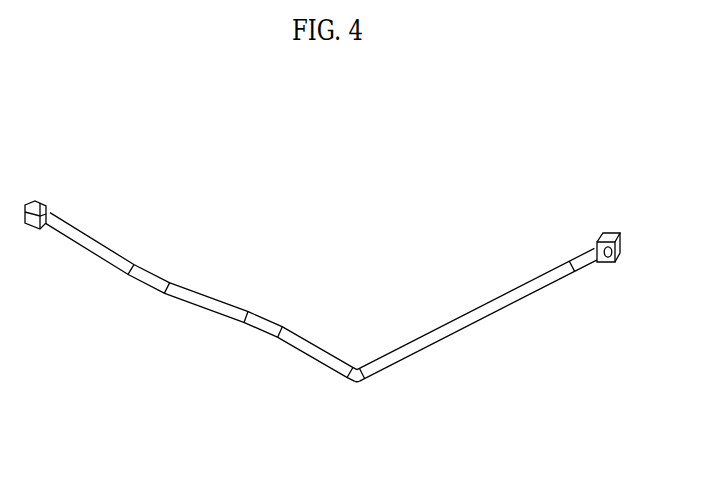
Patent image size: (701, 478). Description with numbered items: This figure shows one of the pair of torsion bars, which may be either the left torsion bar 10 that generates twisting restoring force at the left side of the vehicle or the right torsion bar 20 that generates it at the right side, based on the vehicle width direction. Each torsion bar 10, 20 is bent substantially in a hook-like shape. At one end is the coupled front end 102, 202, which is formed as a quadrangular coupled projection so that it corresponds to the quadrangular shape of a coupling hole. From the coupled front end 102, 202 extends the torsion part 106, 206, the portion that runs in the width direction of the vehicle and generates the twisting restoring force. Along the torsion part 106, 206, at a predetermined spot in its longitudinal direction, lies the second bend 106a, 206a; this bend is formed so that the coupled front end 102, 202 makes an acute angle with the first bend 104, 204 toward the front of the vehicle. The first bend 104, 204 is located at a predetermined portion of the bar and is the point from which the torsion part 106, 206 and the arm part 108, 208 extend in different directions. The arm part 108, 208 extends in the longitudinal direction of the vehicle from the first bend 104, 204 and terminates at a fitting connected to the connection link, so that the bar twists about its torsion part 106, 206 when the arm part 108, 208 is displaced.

The left torsion bar 10 is at (322, 287).
The right torsion bar 20 is at (270, 262).
The coupled front end 102 is at (63, 184).
The coupled front end 202 is at (41, 203).
The first bend 104 is at (330, 402).
The first bend 204 is at (354, 382).
The torsion part 106 is at (195, 297).
The torsion part 206 is at (97, 256).
The second bend 106a is at (200, 311).
The second bend 206a is at (192, 302).
The arm part 108 is at (488, 307).
The arm part 208 is at (522, 300).